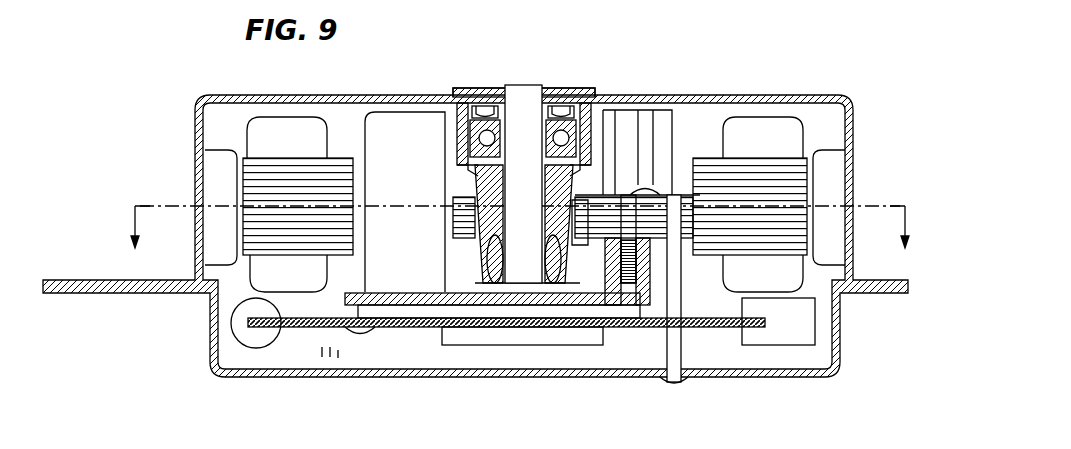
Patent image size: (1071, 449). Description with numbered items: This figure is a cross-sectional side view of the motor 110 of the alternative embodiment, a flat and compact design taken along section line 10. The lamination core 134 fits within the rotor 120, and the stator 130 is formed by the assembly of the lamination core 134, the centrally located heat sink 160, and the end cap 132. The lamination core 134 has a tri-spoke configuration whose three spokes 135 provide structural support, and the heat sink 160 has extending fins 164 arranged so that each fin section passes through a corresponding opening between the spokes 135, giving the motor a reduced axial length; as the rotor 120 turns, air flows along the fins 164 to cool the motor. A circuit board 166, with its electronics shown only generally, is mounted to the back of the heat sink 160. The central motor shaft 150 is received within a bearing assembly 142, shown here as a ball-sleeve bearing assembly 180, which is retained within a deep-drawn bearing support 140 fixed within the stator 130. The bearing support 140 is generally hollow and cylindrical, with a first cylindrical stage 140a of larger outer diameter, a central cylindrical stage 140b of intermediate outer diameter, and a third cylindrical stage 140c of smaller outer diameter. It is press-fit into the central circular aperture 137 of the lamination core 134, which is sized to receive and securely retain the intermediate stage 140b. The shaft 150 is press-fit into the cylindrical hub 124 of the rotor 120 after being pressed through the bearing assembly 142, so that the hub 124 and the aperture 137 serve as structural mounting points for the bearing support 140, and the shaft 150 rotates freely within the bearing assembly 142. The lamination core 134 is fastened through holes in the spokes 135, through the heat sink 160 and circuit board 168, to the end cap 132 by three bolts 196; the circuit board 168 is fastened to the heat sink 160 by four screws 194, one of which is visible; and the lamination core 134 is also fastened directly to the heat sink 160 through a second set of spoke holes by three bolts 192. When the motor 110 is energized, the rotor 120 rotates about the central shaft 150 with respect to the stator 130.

The section line 10 is at (521, 236).
The motor 110 is at (122, 130).
The rotor 120 is at (820, 92).
The cylindrical hub 124 is at (487, 87).
The stator 130 is at (238, 120).
The end cap 132 is at (332, 378).
The lamination core 134 is at (350, 158).
The spokes 135 is at (706, 155).
The central circular aperture 137 is at (605, 178).
The bearing support 140 is at (470, 252).
The first cylindrical stage 140a is at (583, 125).
The central cylindrical stage 140b is at (580, 210).
The third cylindrical stage 140c is at (565, 285).
The bearing assembly 142 is at (608, 76).
The central motor shaft 150 is at (524, 85).
The heat sink 160 is at (353, 278).
The fins 164 is at (400, 112).
The circuit board 166 is at (523, 350).
The circuit board 168 is at (413, 330).
The ball-sleeve bearing assembly 180 is at (466, 259).
The bolts 192 is at (636, 255).
The screws 194 is at (365, 335).
The bolts 196 is at (712, 364).